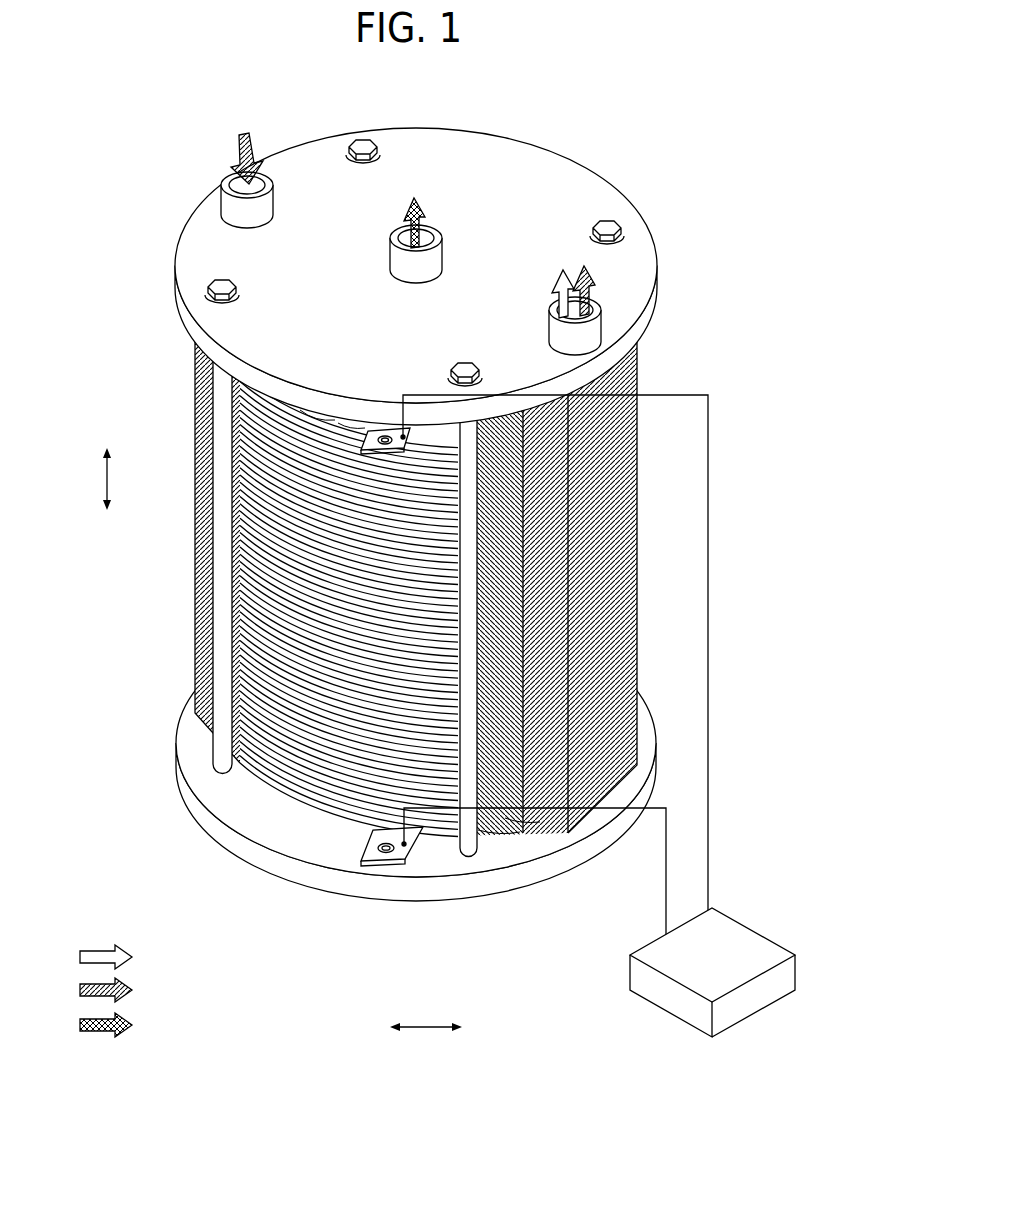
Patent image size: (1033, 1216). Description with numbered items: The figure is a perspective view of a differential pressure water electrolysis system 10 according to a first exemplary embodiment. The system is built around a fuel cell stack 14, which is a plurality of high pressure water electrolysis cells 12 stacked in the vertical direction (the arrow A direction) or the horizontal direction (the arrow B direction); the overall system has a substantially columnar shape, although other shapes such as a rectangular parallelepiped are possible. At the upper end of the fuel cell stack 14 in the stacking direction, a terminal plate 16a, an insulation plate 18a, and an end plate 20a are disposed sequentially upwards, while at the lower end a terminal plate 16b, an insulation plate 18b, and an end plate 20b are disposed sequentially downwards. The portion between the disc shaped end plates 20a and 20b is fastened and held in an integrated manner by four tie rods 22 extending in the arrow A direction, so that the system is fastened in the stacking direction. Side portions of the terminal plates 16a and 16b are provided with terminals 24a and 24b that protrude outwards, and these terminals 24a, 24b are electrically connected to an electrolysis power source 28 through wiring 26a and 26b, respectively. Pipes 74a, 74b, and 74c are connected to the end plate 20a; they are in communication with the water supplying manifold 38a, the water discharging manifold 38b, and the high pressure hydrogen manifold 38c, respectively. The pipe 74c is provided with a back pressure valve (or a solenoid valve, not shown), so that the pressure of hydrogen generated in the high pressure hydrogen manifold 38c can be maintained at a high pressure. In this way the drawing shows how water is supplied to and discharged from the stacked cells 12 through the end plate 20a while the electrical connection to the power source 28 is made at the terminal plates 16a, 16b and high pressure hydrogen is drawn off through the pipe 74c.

The differential pressure water electrolysis system 10 is at (457, 86).
The high pressure water electrolysis cell 12 is at (234, 575).
The fuel cell stack 14 is at (361, 580).
The terminal plate 16a is at (350, 428).
The terminal plate 16b is at (517, 818).
The insulation plate 18a is at (316, 416).
The insulation plate 18b is at (500, 832).
The end plate 20a is at (590, 167).
The end plate 20b is at (638, 691).
The tie rod 22 is at (468, 858).
The terminal 24a is at (379, 430).
The terminal 24b is at (388, 868).
The wiring 26a is at (711, 862).
The wiring 26b is at (666, 903).
The electrolysis power source 28 is at (760, 950).
The water supplying manifold 38a is at (273, 198).
The water discharging manifold 38b is at (598, 331).
The high pressure hydrogen manifold 38c is at (433, 262).
The pipe 74a is at (306, 180).
The pipe 74b is at (665, 310).
The pipe 74c is at (462, 239).